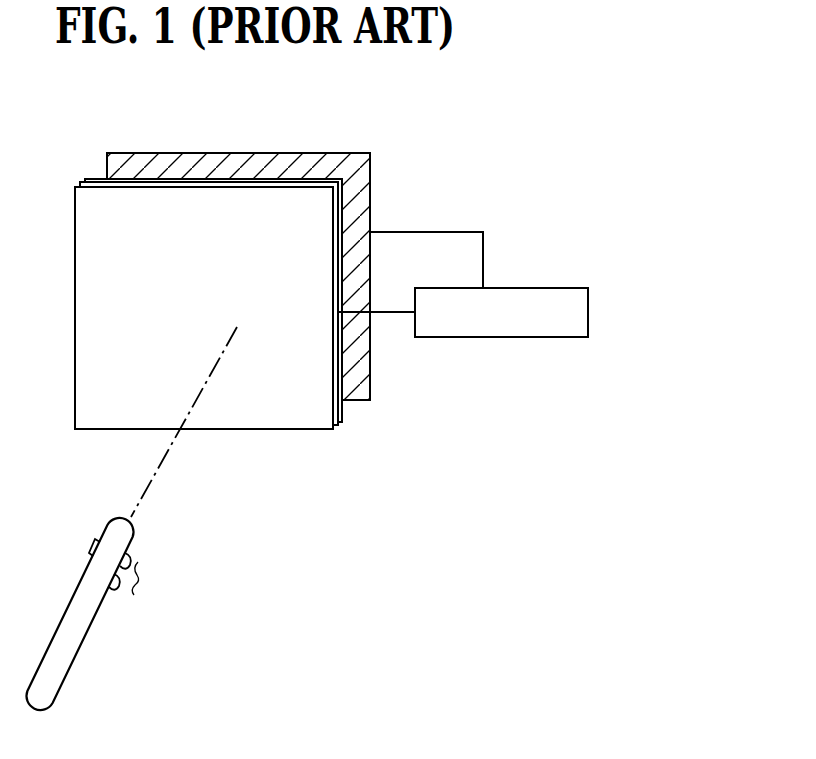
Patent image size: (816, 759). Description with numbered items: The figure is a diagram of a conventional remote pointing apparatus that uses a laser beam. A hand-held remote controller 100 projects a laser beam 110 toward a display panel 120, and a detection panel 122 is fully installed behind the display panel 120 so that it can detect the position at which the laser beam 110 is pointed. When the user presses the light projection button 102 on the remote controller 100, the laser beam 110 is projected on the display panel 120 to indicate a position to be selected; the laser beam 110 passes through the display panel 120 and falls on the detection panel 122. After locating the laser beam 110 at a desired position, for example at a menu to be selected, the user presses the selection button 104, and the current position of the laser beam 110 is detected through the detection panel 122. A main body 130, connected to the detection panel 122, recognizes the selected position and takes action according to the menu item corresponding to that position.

The remote controller 100 is at (151, 609).
The light projection button 102 is at (92, 552).
The selection button 104 is at (153, 580).
The laser beam 110 is at (165, 460).
The display panel 120 is at (193, 207).
The detection panel 122 is at (304, 153).
The main body 130 is at (590, 314).